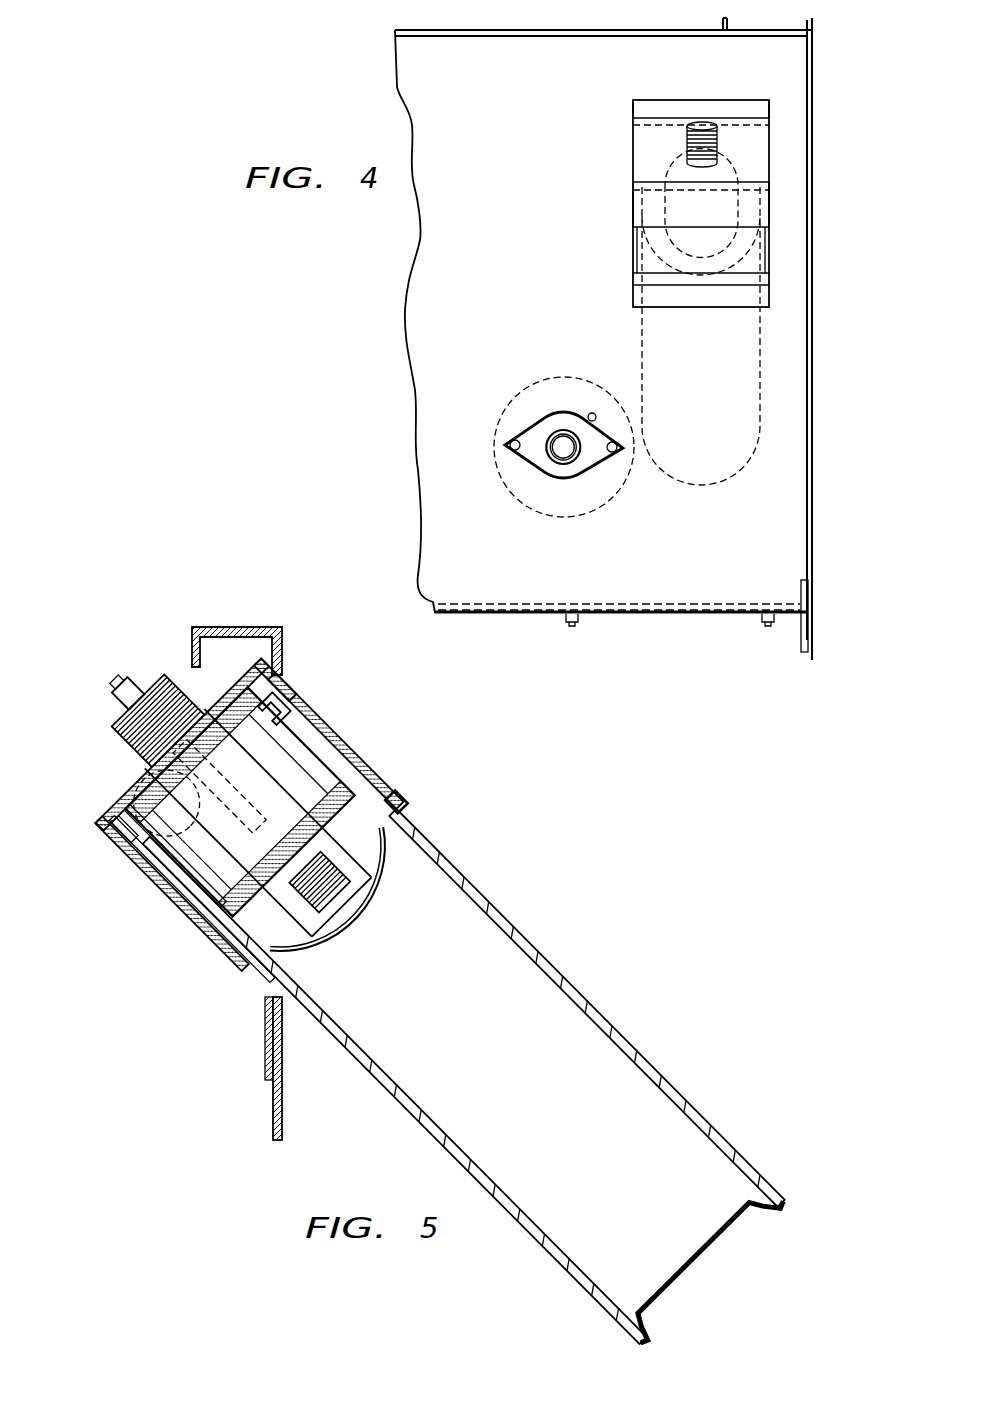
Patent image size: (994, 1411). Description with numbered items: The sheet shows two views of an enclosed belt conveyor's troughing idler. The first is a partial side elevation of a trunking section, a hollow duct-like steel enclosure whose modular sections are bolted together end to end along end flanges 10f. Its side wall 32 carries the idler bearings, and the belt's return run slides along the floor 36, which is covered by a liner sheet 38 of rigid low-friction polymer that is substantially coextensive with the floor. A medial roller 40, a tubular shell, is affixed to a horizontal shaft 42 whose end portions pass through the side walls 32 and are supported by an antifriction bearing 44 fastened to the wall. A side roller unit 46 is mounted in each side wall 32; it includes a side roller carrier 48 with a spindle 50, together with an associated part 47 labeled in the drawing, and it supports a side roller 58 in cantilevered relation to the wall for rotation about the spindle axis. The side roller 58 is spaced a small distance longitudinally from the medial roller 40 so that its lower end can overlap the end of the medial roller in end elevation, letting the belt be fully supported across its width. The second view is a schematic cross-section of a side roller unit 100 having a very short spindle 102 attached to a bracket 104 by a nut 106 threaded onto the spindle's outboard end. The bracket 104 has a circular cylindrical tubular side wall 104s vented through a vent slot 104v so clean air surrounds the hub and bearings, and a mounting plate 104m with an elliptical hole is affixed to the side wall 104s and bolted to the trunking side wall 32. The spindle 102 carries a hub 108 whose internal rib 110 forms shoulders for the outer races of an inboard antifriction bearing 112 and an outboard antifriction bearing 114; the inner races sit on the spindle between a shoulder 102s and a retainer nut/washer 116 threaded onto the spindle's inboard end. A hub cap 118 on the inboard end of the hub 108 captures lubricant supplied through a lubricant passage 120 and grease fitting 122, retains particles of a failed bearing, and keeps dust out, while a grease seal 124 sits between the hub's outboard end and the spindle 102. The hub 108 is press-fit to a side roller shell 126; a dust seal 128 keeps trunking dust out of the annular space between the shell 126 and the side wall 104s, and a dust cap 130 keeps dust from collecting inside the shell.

In FIG. 4, the end flange 10f is at (814, 305).
In FIG. 4, the side wall 32 is at (542, 158).
In FIG. 5, the side wall 32 is at (273, 1110).
In FIG. 4, the floor 36 is at (515, 614).
In FIG. 4, the liner sheet 38 is at (495, 603).
In FIG. 4, the medial roller 40 is at (510, 392).
In FIG. 4, the horizontal shaft 42 is at (560, 455).
In FIG. 4, the antifriction bearing 44 is at (562, 406).
In FIG. 4, the side roller unit 46 is at (626, 258).
In FIG. 4, the bracket flange 47 is at (742, 130).
In FIG. 4, the side roller carrier 48 is at (663, 178).
In FIG. 4, the spindle 50 is at (700, 124).
In FIG. 4, the side roller 58 is at (700, 487).
In FIG. 5, the side roller unit 100 is at (126, 656).
In FIG. 5, the spindle 102 is at (323, 762).
In FIG. 5, the shoulder 102s is at (172, 868).
In FIG. 5, the bracket 104 is at (103, 788).
In FIG. 5, the tubular side wall 104s is at (357, 763).
In FIG. 5, the vent slot 104v is at (197, 925).
In FIG. 5, the mounting plate 104m is at (265, 1040).
In FIG. 5, the nut 106 is at (172, 688).
In FIG. 5, the hub 108 is at (283, 717).
In FIG. 5, the internal rib 110 is at (238, 838).
In FIG. 5, the inboard antifriction bearing 112 is at (218, 948).
In FIG. 5, the outboard antifriction bearing 114 is at (198, 918).
In FIG. 5, the retainer nut/washer 116 is at (376, 884).
In FIG. 5, the hub cap 118 is at (357, 915).
In FIG. 5, the lubricant passage 120 is at (118, 849).
In FIG. 5, the grease fitting 122 is at (120, 690).
In FIG. 5, the grease seal 124 is at (290, 697).
In FIG. 5, the side roller shell 126 is at (596, 1012).
In FIG. 5, the dust seal 128 is at (392, 797).
In FIG. 5, the dust cap 130 is at (700, 1260).